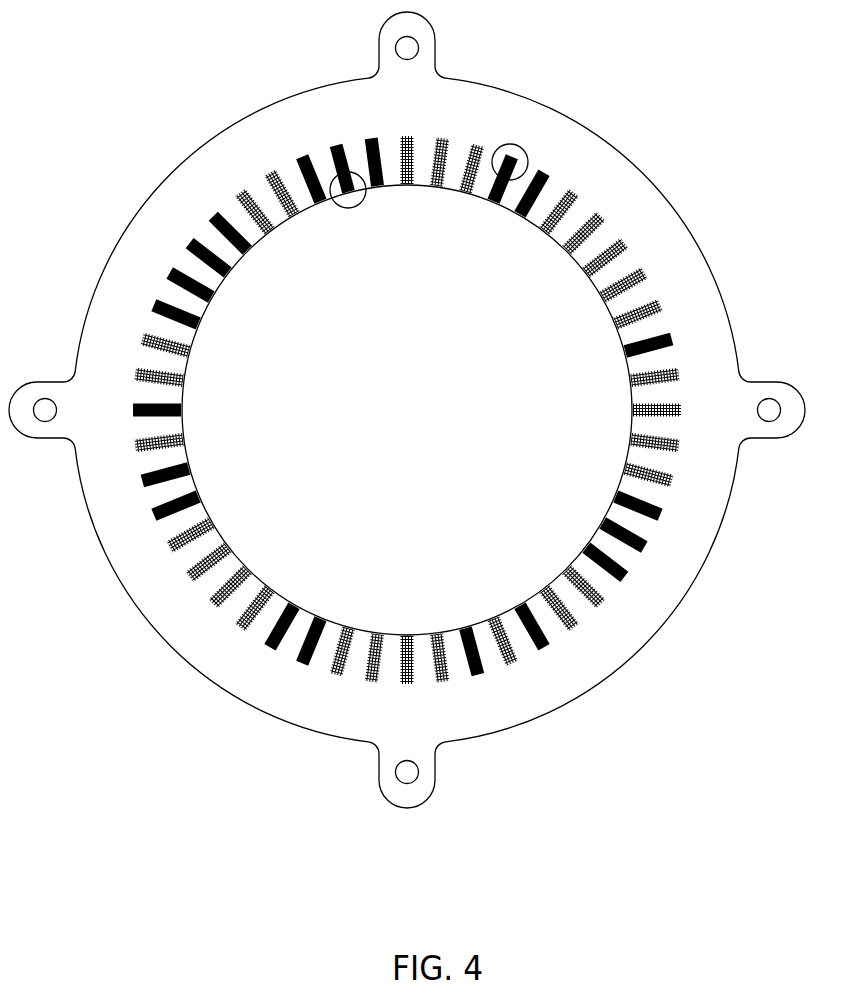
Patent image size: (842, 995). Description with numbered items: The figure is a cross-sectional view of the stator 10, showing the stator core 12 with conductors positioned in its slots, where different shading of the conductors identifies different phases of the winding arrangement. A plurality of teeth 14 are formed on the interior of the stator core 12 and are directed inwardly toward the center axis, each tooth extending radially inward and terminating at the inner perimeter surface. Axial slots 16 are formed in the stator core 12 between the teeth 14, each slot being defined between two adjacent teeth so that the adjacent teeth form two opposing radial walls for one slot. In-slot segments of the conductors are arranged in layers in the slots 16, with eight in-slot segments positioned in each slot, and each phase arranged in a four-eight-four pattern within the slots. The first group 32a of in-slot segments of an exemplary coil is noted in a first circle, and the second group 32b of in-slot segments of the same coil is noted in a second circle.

The stator 10 is at (407, 410).
The stator core 12 is at (677, 585).
The teeth 14 is at (602, 542).
The slots 16 is at (543, 590).
The first group of in-slot segments 32a is at (339, 174).
The second group of in-slot segments 32b is at (522, 149).